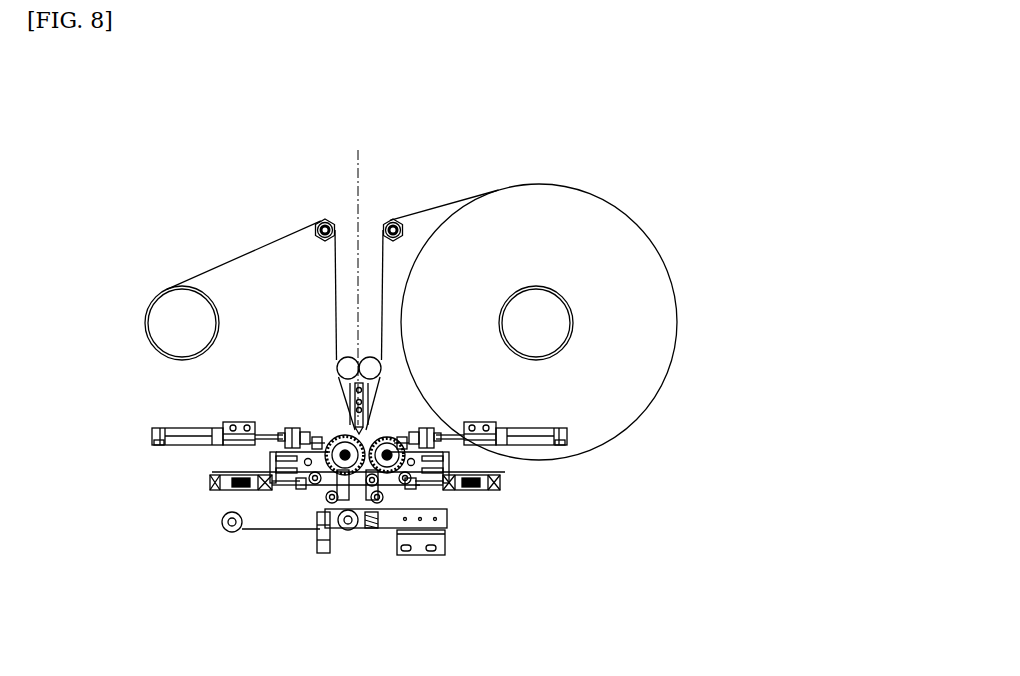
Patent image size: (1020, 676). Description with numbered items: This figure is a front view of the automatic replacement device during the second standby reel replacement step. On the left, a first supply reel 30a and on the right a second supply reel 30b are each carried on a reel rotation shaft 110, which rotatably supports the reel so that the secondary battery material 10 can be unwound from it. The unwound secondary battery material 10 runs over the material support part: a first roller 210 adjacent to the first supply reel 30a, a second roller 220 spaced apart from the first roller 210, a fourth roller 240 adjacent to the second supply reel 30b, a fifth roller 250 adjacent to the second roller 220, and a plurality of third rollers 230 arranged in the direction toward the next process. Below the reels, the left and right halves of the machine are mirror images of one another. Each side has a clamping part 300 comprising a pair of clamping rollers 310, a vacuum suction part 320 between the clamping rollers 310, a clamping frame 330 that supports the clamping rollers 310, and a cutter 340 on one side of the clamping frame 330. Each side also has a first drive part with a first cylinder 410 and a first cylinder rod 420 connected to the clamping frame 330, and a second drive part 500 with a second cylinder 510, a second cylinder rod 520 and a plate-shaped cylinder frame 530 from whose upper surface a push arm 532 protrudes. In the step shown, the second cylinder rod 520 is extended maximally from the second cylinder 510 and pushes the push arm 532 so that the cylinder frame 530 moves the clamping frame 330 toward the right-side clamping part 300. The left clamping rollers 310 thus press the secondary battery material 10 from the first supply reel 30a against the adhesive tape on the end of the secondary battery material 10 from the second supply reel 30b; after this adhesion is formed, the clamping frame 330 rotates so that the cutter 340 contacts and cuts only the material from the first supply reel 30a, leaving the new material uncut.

The secondary battery material 10 is at (285, 237).
The first supply reel 30a is at (152, 300).
The second supply reel 30b is at (561, 292).
The reel rotation shaft 110 is at (152, 328).
The first roller 210 is at (325, 218).
The second roller 220 is at (341, 360).
The third rollers 230 is at (222, 522).
The fourth roller 240 is at (393, 218).
The fifth roller 250 is at (378, 360).
The clamping part 300 is at (570, 523).
The clamping rollers 310 is at (460, 490).
The vacuum suction part 320 is at (420, 518).
The clamping frame 330 is at (427, 500).
The cutter 340 is at (405, 540).
The first cylinder 410 is at (212, 483).
The first cylinder rod 420 is at (268, 463).
The second drive part 500 is at (98, 372).
The second cylinder 510 is at (207, 432).
The second cylinder rod 520 is at (255, 424).
The cylinder frame 530 is at (291, 432).
The push arm 532 is at (323, 425).